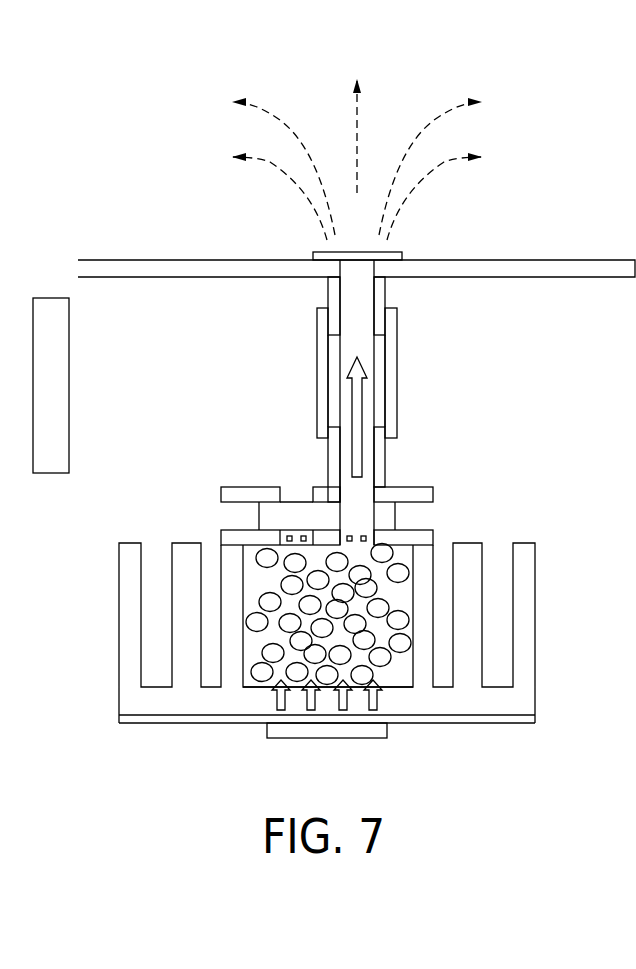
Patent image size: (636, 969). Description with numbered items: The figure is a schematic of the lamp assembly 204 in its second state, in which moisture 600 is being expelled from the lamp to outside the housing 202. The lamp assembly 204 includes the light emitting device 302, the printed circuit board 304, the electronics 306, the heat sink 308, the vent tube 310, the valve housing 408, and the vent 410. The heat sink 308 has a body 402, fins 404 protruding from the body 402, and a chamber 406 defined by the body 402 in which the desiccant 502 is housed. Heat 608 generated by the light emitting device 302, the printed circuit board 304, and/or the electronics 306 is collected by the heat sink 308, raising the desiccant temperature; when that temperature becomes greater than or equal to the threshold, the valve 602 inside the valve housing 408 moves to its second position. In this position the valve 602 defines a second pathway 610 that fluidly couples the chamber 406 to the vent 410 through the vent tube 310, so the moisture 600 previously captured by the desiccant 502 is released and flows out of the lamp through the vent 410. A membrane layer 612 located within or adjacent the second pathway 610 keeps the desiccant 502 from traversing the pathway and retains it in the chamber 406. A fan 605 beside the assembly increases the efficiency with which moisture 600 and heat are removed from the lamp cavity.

The moisture 600 is at (432, 108).
The vent 410 is at (327, 250).
The housing 202 is at (568, 260).
The fan 605 is at (69, 350).
The vent tube 310 is at (397, 375).
The valve housing 408 is at (233, 487).
The valve 602 is at (296, 513).
The second pathway 610 is at (354, 498).
The membrane layer 612 is at (364, 536).
The chamber 406 is at (400, 596).
The desiccant 502 is at (265, 580).
The fins 404 is at (524, 612).
The heat sink 308 is at (138, 703).
The electronics 306 is at (142, 740).
The lamp assembly 204 is at (330, 668).
The heat 608 is at (275, 697).
The light emitting device 302 is at (329, 738).
The body 402 is at (422, 695).
The printed circuit board 304 is at (483, 724).